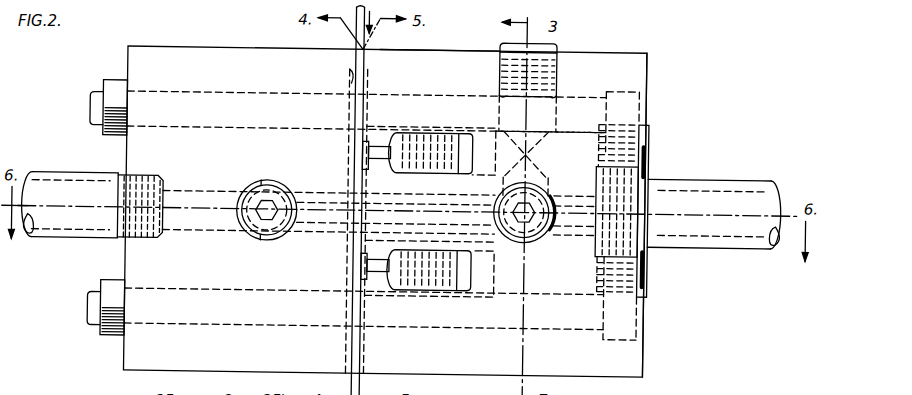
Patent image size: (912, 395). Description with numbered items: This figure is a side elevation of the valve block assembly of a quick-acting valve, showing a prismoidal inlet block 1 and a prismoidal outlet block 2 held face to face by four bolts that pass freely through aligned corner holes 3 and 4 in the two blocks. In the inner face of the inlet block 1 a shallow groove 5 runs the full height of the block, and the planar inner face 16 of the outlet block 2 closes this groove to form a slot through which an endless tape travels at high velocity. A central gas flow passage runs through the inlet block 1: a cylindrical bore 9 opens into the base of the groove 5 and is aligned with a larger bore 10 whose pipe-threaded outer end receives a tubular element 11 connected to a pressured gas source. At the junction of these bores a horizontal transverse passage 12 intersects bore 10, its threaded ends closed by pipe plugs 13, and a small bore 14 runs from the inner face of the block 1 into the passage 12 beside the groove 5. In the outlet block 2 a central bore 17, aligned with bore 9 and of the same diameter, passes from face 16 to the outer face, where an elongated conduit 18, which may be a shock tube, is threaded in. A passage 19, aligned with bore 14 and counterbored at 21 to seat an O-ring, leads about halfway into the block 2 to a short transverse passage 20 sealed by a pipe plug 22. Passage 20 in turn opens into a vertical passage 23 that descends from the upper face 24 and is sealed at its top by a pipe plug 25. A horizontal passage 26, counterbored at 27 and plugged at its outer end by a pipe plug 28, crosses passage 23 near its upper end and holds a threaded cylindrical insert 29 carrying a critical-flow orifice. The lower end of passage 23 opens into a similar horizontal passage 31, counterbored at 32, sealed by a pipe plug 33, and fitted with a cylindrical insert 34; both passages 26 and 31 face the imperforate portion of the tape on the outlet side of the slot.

The inlet block 1 is at (128, 60).
The outlet block 2 is at (640, 68).
The corner holes 3 is at (175, 92).
The corner holes 4 is at (490, 96).
The groove 5 is at (352, 74).
The cylindrical bore 9 is at (330, 190).
The bore 10 is at (210, 186).
The tubular element 11 is at (62, 172).
The transverse cylindrical passage 12 is at (266, 183).
The pipe plugs 13 is at (258, 225).
The bore 14 is at (335, 216).
The inner face 16 is at (355, 340).
The central cylindrical bore 17 is at (428, 197).
The conduit 18 is at (718, 178).
The cylindrical passage 19 is at (494, 222).
The transverse cylindrical passage 20 is at (540, 176).
The counterbore 21 is at (378, 237).
The pipe plug 22 is at (532, 232).
The vertical cylindrical passage 23 is at (552, 118).
The upper face 24 is at (434, 46).
The pipe plug 25 is at (558, 48).
The horizontal cylindrical passage 26 is at (475, 130).
The counterbore 27 is at (374, 143).
The pipe plug 28 is at (652, 134).
The cylindrical insert 29 is at (422, 135).
The horizontal cylindrical passage 31 is at (508, 288).
The counterbore 32 is at (372, 278).
The pipe plug 33 is at (652, 288).
The cylindrical insert 34 is at (418, 287).